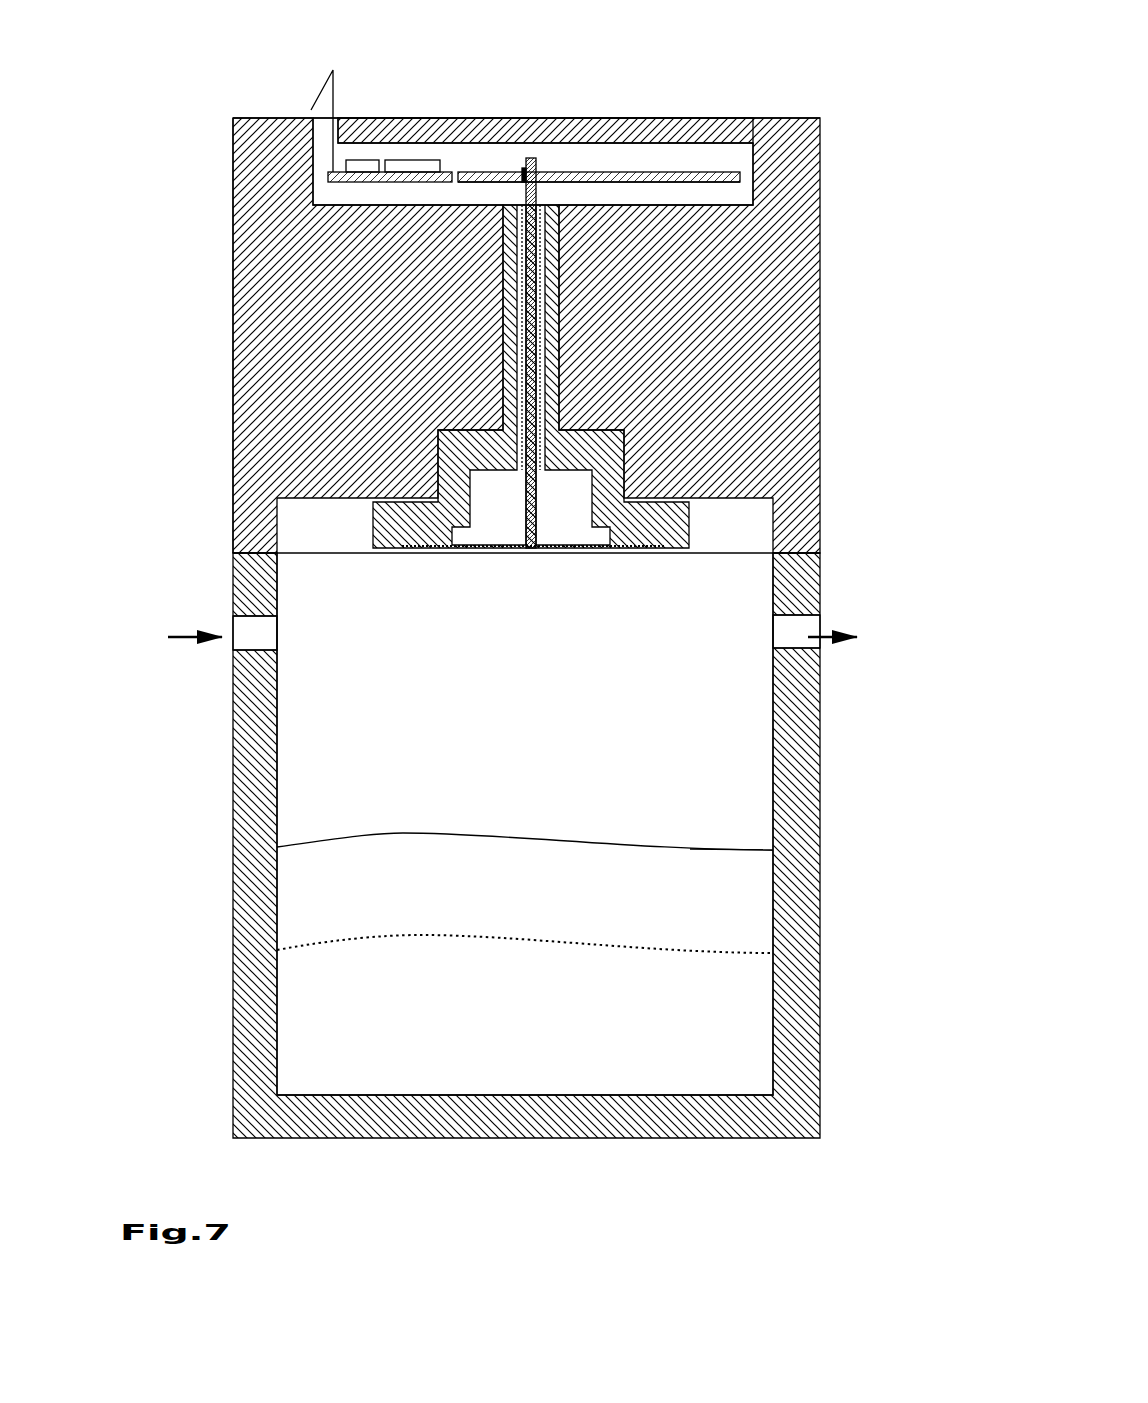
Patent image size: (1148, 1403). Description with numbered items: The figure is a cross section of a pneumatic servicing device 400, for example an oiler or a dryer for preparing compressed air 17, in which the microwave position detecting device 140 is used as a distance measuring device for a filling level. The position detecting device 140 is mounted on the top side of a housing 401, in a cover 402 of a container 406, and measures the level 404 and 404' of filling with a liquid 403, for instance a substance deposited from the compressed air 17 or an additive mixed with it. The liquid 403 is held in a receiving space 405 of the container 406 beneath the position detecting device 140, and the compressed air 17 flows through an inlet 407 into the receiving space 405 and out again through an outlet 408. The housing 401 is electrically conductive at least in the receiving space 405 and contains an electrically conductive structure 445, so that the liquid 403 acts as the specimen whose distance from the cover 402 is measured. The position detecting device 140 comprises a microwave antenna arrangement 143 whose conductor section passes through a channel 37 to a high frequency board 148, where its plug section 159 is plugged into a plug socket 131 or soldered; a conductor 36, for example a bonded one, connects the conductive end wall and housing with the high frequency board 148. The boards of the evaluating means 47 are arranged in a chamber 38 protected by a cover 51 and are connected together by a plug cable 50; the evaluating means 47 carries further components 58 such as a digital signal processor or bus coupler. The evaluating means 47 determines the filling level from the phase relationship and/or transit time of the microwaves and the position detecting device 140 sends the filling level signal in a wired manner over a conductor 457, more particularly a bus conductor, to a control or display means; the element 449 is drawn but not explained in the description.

The pneumatic servicing device 400 is at (787, 114).
The housing 401 is at (188, 176).
The cover 402 is at (233, 405).
The liquid 403 is at (541, 1041).
The filling level 404 is at (525, 807).
The filling level 404' is at (525, 913).
The receiving space 405 is at (312, 812).
The container 406 is at (232, 583).
The inlet 407 is at (245, 642).
The outlet 408 is at (820, 618).
The compressed air 17 is at (185, 640).
The electrically conductive structure 445 is at (730, 848).
The conductor 457 is at (318, 93).
The components 58 is at (410, 160).
The plug cable 50 is at (470, 168).
The plug section 159 is at (527, 158).
The plug socket 131 is at (538, 170).
The conductor 36 is at (560, 203).
The high frequency board 148 is at (623, 180).
The cover 51 is at (717, 122).
The chamber 38 is at (735, 164).
The cavity wall 449 is at (298, 217).
The evaluating means 47 is at (398, 197).
The position detecting device 140 is at (738, 220).
The channel 37 is at (548, 326).
The microwave antenna arrangement 143 is at (612, 388).